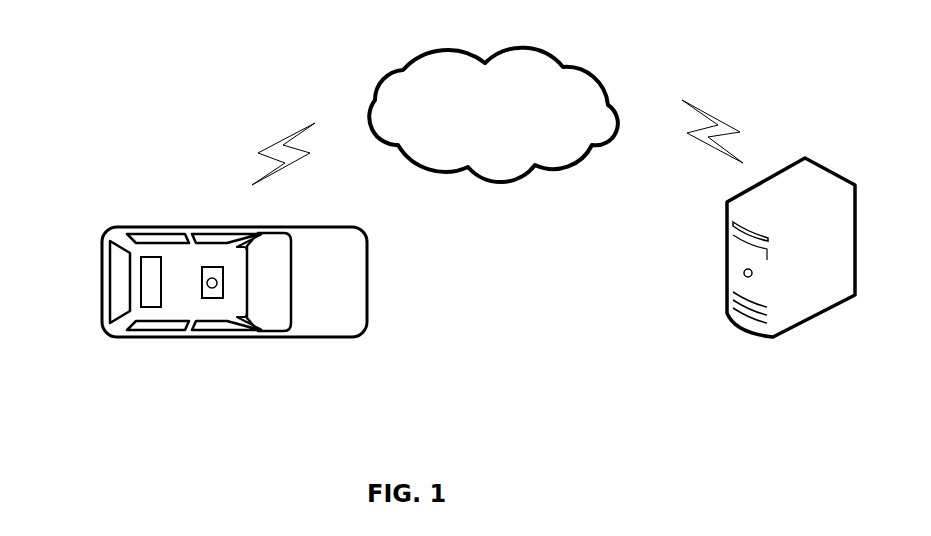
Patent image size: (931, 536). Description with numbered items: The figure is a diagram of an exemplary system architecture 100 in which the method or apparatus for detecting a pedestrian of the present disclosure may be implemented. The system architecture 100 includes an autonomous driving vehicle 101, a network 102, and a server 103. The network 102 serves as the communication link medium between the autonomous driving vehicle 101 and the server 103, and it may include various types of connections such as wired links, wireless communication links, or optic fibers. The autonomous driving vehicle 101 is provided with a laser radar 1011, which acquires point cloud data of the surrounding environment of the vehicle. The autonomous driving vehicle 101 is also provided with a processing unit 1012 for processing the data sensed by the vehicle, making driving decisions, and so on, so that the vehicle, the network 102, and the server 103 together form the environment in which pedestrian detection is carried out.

The system architecture 100 is at (434, 205).
The autonomous driving vehicle 101 is at (190, 315).
The laser radar 1011 is at (207, 298).
The processing unit 1012 is at (152, 298).
The network 102 is at (493, 115).
The server 103 is at (791, 271).